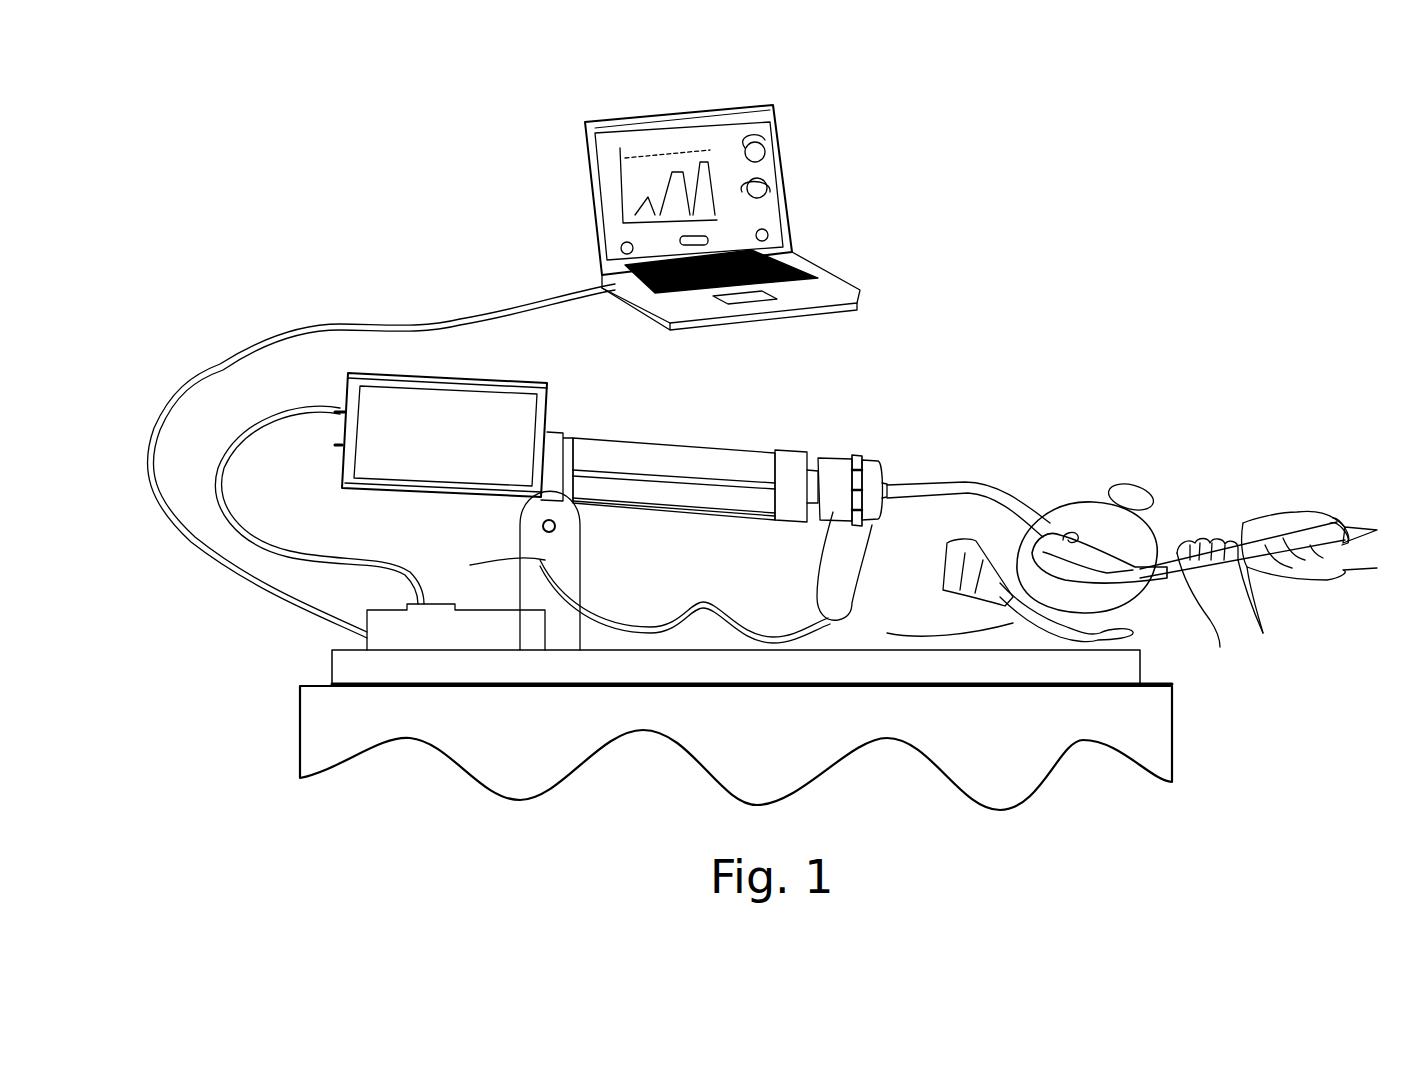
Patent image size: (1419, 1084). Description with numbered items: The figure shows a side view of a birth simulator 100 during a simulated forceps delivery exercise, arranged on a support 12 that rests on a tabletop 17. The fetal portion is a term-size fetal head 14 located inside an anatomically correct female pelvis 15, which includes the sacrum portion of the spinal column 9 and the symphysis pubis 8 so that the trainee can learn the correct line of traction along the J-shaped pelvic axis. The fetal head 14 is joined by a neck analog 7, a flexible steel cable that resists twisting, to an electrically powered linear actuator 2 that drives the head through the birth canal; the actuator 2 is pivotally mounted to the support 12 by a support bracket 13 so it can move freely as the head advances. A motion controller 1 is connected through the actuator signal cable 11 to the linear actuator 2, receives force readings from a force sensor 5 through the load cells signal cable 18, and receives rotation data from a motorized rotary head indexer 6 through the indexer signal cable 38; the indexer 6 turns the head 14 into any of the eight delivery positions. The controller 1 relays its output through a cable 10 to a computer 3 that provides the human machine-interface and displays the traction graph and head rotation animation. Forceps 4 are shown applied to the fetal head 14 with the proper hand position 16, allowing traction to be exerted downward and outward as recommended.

The motion controller 1 is at (440, 630).
The linear actuator 2 is at (605, 421).
The computer 3 is at (800, 182).
The forceps 4 is at (1167, 580).
The force sensor 5 is at (837, 475).
The motorized rotary head indexer 6 is at (867, 473).
The neck analog 7 is at (977, 484).
The symphysis pubis 8 is at (1147, 497).
The sacrum portion of the spinal column 9 is at (1010, 620).
The cable 10 is at (466, 323).
The actuator signal cable 11 is at (324, 405).
The support 12 is at (342, 665).
The support bracket 13 is at (538, 540).
The fetal head 14 is at (1140, 547).
The female pelvis 15 is at (947, 573).
The hand position 16 is at (1303, 570).
The tabletop 17 is at (1053, 738).
The load cells signal cable 18 is at (835, 547).
The indexer signal cable 38 is at (840, 602).
The birth simulator 100 is at (1008, 250).